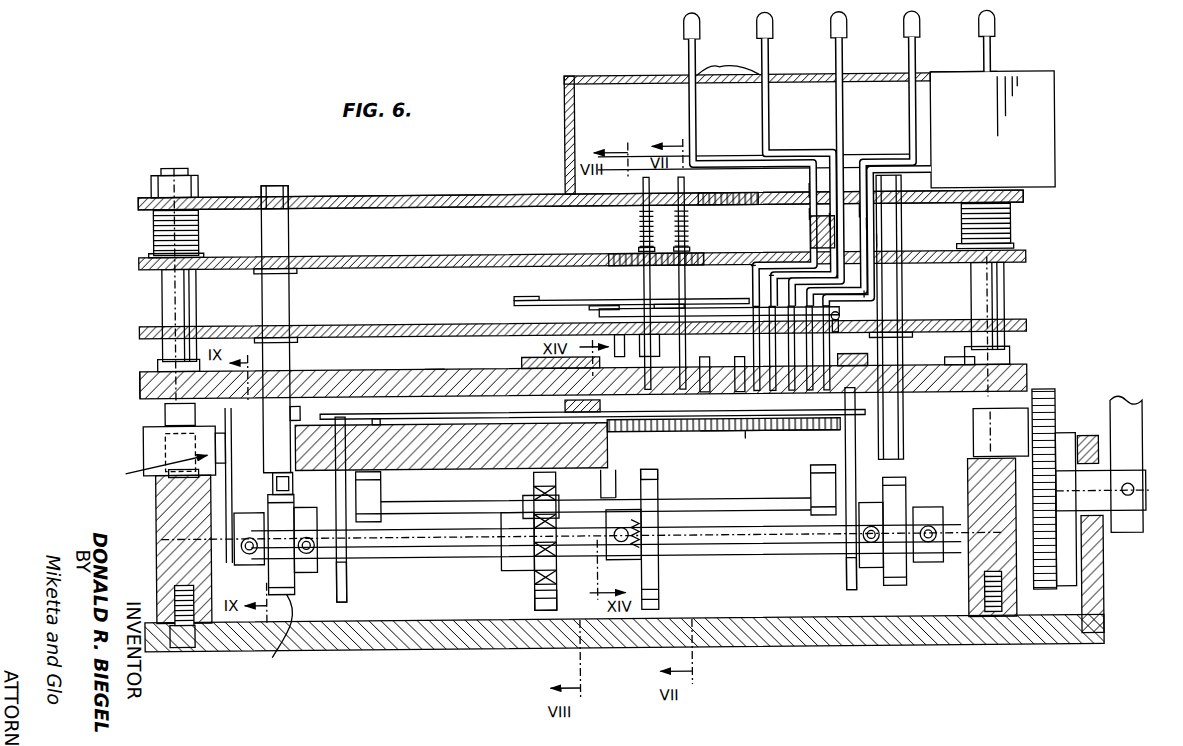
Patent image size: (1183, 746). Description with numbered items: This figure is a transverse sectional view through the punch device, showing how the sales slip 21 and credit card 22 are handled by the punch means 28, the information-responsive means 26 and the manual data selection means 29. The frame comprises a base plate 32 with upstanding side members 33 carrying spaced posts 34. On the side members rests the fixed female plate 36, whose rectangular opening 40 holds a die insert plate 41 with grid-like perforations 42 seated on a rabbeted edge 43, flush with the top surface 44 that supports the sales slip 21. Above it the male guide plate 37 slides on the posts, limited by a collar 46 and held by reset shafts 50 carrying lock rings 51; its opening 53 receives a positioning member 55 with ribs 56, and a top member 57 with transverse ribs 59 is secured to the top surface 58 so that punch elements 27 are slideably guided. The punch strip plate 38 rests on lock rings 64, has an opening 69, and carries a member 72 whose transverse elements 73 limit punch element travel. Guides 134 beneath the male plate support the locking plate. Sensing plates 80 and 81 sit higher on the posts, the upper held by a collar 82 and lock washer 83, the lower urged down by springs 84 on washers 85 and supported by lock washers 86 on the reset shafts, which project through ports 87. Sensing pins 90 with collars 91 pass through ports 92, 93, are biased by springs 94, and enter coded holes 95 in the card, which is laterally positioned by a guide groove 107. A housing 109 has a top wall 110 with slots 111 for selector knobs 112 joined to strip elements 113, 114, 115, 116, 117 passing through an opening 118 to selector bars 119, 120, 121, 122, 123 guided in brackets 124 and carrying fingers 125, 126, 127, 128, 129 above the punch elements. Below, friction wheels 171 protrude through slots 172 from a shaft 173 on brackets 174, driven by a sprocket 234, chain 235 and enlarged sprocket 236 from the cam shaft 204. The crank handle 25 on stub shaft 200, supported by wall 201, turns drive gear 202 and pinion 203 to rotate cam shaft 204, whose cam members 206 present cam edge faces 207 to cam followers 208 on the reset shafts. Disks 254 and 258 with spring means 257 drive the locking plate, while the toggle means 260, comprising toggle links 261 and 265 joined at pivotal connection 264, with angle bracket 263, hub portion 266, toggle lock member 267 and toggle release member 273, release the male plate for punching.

The sales slip 21 is at (376, 418).
The credit card 22 is at (567, 300).
The crank handle 25 is at (1126, 402).
The information-responsive means 26 is at (509, 190).
The punch elements 27 is at (642, 309).
The punch means 28 is at (137, 380).
The data selection means 29 is at (942, 60).
The base plate 32 is at (805, 648).
The side members 33 is at (155, 500).
The posts 34 is at (163, 300).
The female plate 36 is at (143, 440).
The male guide plate 37 is at (142, 392).
The punch strip plate 38 is at (140, 329).
The rectangular opening 40 is at (607, 458).
The die insert plate 41 is at (745, 435).
The perforations 42 is at (670, 434).
The rabbeted edge 43 is at (598, 480).
The top surface 44 is at (433, 418).
The collar 46 is at (158, 362).
The reset shafts 50 is at (290, 239).
The lock ring 51 is at (296, 406).
The opening 53 is at (840, 360).
The punch element positioning member 55 is at (705, 366).
The ribs 56 is at (742, 366).
The top member 57 is at (522, 358).
The top surface 58 is at (427, 368).
The ribs 59 is at (656, 343).
The lock ring 64 is at (298, 340).
The opening 69 is at (623, 343).
The member 72 is at (840, 319).
The transverse elements 73 is at (600, 311).
The lower sensing plate 80 is at (140, 262).
The upper sensing plate 81 is at (140, 200).
The collar 82 is at (152, 182).
The lock washer 83 is at (192, 170).
The spring 84 is at (200, 228).
The washer 85 is at (152, 252).
The lock washer 86 is at (298, 270).
The port 87 is at (292, 194).
The sensing pins 90 is at (645, 210).
The collar 91 is at (640, 250).
The port 92 is at (700, 256).
The port 93 is at (715, 206).
The spring 94 is at (645, 235).
The circular holes 95 is at (658, 304).
The guide groove 107 is at (518, 305).
The housing 109 is at (1057, 86).
The top wall 110 is at (866, 76).
The slots 111 is at (722, 68).
The punch selector knobs 112 is at (687, 26).
The strip element 113 is at (690, 125).
The strip element 114 is at (773, 116).
The strip element 115 is at (847, 114).
The strip element 116 is at (920, 116).
The strip element 117 is at (933, 165).
The rectangular opening 118 is at (810, 192).
The punch selector bar 119 is at (810, 216).
The punch selector bar 120 is at (830, 222).
The punch selector bar 121 is at (870, 214).
The punch selector bar 122 is at (875, 226).
The punch selector bar 123 is at (880, 240).
The brackets 124 is at (812, 236).
The punch element selector finger 125 is at (752, 270).
The punch element selector finger 126 is at (770, 288).
The punch element selector finger 127 is at (775, 304).
The punch element selector finger 128 is at (830, 303).
The punch element selector finger 129 is at (868, 298).
The guides 134 is at (565, 406).
The friction wheels 171 is at (346, 585).
The slots 172 is at (342, 418).
The shaft 173 is at (690, 500).
The brackets 174 is at (380, 492).
The stub shaft 200 is at (1143, 475).
The upstanding wall 201 is at (1102, 597).
The drive gear 202 is at (1055, 400).
The pinion gear 203 is at (1075, 570).
The cam shaft 204 is at (722, 556).
The cam member 206 is at (290, 592).
The cam edge face 207 is at (270, 657).
The cam follower 208 is at (292, 482).
The sprocket 234 is at (533, 480).
The chain 235 is at (510, 560).
The enlarged sprocket 236 is at (533, 598).
The disk 254 is at (657, 476).
The spring means 257 is at (608, 548).
The disk 258 is at (657, 590).
The toggle means 260 is at (125, 470).
The toggle link 261 is at (215, 445).
The angle bracket 263 is at (175, 410).
The pivotal connection 264 is at (175, 478).
The toggle link 265 is at (230, 505).
The hub portion 266 is at (245, 562).
The toggle lock member 267 is at (1020, 440).
The toggle release member 273 is at (905, 565).